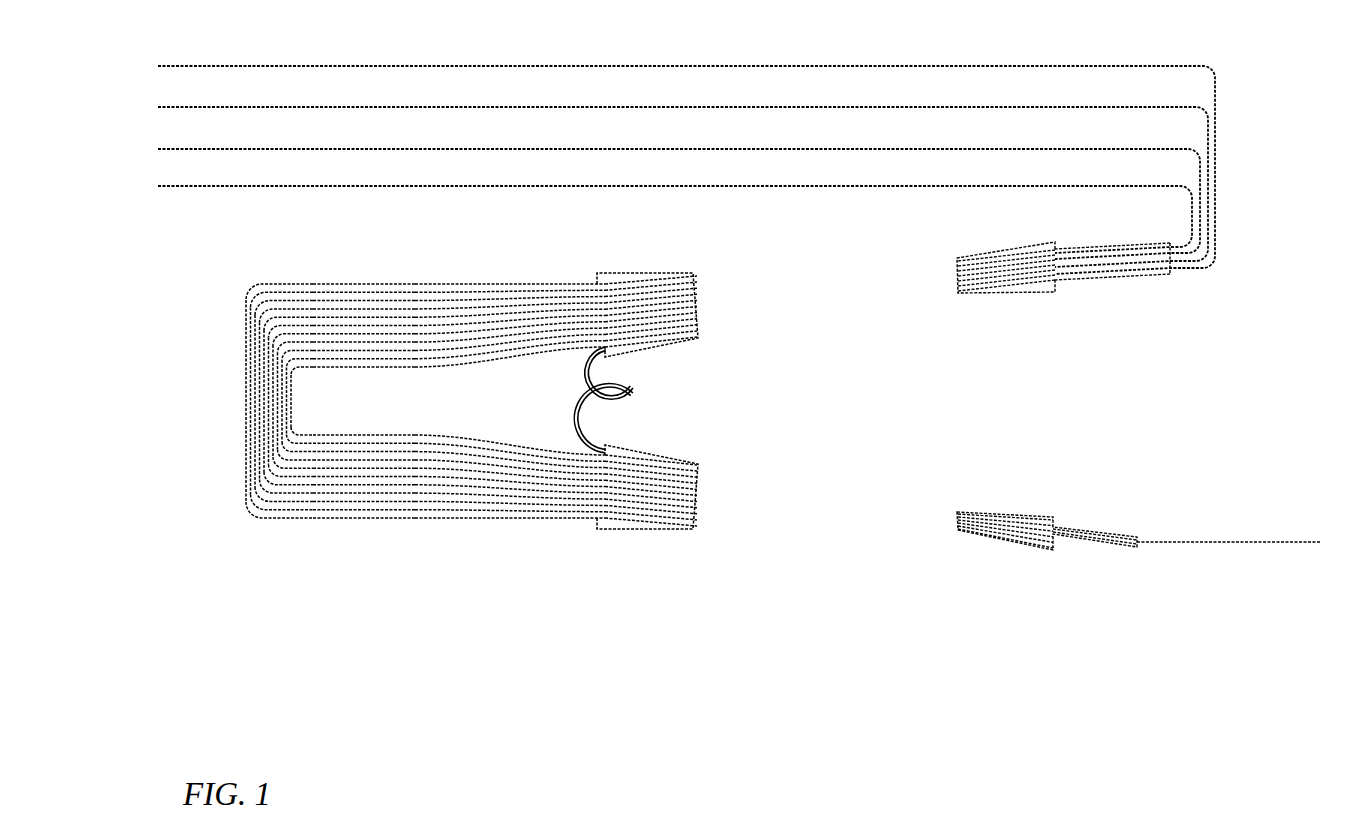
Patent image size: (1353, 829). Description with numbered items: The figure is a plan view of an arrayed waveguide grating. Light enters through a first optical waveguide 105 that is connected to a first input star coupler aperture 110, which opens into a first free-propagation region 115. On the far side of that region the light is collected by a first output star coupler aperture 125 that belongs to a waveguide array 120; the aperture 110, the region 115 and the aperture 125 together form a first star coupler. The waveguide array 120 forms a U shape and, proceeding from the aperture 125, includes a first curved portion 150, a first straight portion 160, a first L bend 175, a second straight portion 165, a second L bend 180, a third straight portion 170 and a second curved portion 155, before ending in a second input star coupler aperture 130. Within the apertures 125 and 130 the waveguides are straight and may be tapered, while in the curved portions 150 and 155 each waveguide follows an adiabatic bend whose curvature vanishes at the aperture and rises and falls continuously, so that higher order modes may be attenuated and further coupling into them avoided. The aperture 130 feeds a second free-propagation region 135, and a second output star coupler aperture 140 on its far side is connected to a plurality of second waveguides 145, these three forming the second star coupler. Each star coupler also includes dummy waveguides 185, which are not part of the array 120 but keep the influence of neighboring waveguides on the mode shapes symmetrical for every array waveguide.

The first optical waveguide 105 is at (1195, 542).
The first input star coupler aperture 110 is at (998, 541).
The first free-propagation region 115 is at (950, 545).
The waveguide array 120 is at (422, 437).
The first output star coupler aperture 125 is at (652, 531).
The second input star coupler aperture 130 is at (652, 271).
The second free-propagation region 135 is at (957, 304).
The second output star coupler aperture 140 is at (1003, 296).
The second waveguides 145 is at (876, 185).
The first curved portion 150 is at (415, 535).
The second curved portion 155 is at (415, 260).
The first straight portion 160 is at (313, 535).
The second straight portion 165 is at (227, 367).
The third straight portion 170 is at (313, 260).
The first L bend 175 is at (238, 487).
The second L bend 180 is at (238, 322).
The dummy waveguides 185 is at (632, 400).